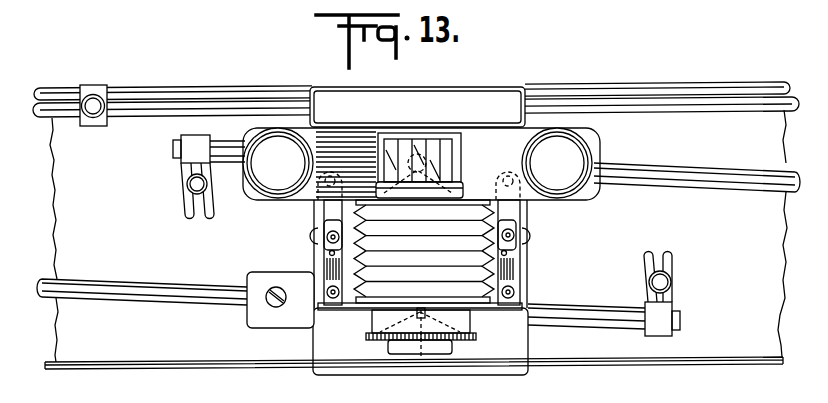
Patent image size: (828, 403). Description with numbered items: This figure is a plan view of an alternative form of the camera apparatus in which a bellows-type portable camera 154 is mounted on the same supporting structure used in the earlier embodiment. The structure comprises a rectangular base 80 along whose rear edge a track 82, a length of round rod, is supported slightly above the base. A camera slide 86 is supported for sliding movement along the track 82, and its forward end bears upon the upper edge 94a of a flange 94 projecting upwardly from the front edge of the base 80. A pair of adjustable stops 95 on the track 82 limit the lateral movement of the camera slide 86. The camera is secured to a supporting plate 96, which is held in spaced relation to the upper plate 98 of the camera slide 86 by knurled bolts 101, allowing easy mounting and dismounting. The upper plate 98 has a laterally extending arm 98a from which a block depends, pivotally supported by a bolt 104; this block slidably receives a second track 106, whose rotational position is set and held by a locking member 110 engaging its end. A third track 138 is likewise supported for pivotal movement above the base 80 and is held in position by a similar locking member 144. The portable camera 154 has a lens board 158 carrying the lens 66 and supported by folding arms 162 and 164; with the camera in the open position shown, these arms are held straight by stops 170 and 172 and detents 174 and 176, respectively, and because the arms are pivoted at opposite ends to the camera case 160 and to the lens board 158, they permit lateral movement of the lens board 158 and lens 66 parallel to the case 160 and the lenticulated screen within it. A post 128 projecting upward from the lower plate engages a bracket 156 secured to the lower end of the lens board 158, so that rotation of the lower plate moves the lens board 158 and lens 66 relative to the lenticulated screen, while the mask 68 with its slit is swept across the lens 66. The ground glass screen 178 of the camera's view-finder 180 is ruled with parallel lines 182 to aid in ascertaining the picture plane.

The lens 66 is at (390, 360).
The mask 68 is at (405, 360).
The base 80 is at (70, 203).
The track 82 is at (756, 99).
The camera slide 86 is at (535, 339).
The flange 94 is at (67, 370).
The upper edge 94a is at (152, 363).
The adjustable stops 95 is at (100, 86).
The supporting plate 96 is at (318, 284).
The upper plate 98 is at (482, 360).
The laterally extending arm 98a is at (257, 316).
The knurled bolts 101 is at (312, 229).
The bolt 104 is at (267, 291).
The second track 106 is at (595, 313).
The locking member 110 is at (679, 298).
The post 128 is at (421, 357).
The third track 138 is at (731, 175).
The locking member 144 is at (181, 172).
The bellows-type portable camera 154 is at (292, 122).
The bracket 156 is at (466, 324).
The lens board 158 is at (352, 314).
The case 160 is at (310, 192).
The folding arm 162 is at (528, 256).
The folding arm 164 is at (322, 252).
The stop 170 is at (483, 234).
The stop 172 is at (426, 229).
The detent 174 is at (484, 259).
The detent 176 is at (428, 255).
The ground glass screen 178 is at (401, 146).
The view-finder 180 is at (457, 147).
The parallel lines 182 is at (452, 150).